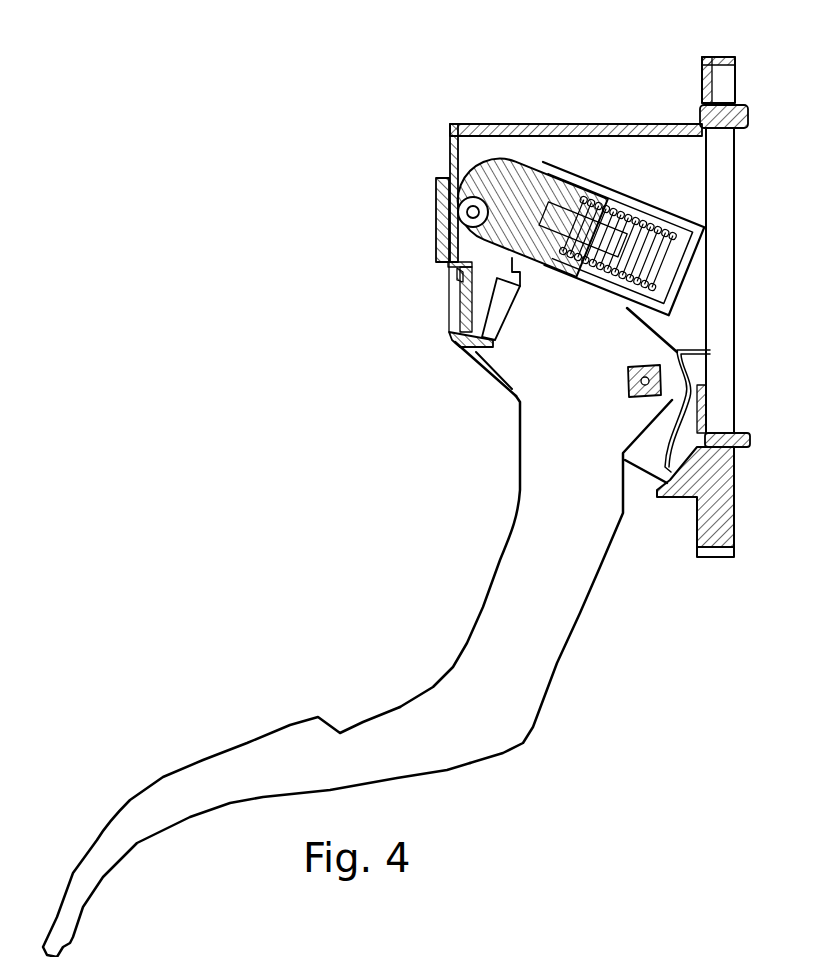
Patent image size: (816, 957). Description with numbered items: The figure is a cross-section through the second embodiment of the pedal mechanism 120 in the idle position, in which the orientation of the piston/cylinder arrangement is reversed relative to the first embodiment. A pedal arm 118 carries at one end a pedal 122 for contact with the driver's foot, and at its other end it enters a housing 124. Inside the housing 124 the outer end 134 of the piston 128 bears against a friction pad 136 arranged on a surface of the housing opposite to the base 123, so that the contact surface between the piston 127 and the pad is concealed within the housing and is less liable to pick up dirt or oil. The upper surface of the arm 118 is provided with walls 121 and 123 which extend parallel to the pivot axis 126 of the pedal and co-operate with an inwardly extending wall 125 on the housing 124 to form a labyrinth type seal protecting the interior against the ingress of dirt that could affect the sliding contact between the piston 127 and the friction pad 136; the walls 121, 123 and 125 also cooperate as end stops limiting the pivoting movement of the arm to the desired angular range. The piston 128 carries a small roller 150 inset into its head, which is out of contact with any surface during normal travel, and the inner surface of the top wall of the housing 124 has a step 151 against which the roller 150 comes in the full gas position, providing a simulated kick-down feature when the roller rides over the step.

The pedal arm 118 is at (452, 664).
The pedal mechanism 120 is at (318, 262).
The wall 121 is at (483, 352).
The pedal 122 is at (148, 787).
The wall / base 123 is at (500, 277).
The housing 124 is at (622, 100).
The inwardly extending wall 125 is at (450, 333).
The pivot axis 126 is at (660, 366).
The piston 127 is at (653, 197).
The piston 128 is at (517, 165).
The outer end 134 is at (450, 160).
The friction pad 136 is at (437, 236).
The roller 150 is at (458, 206).
The step 151 is at (450, 275).